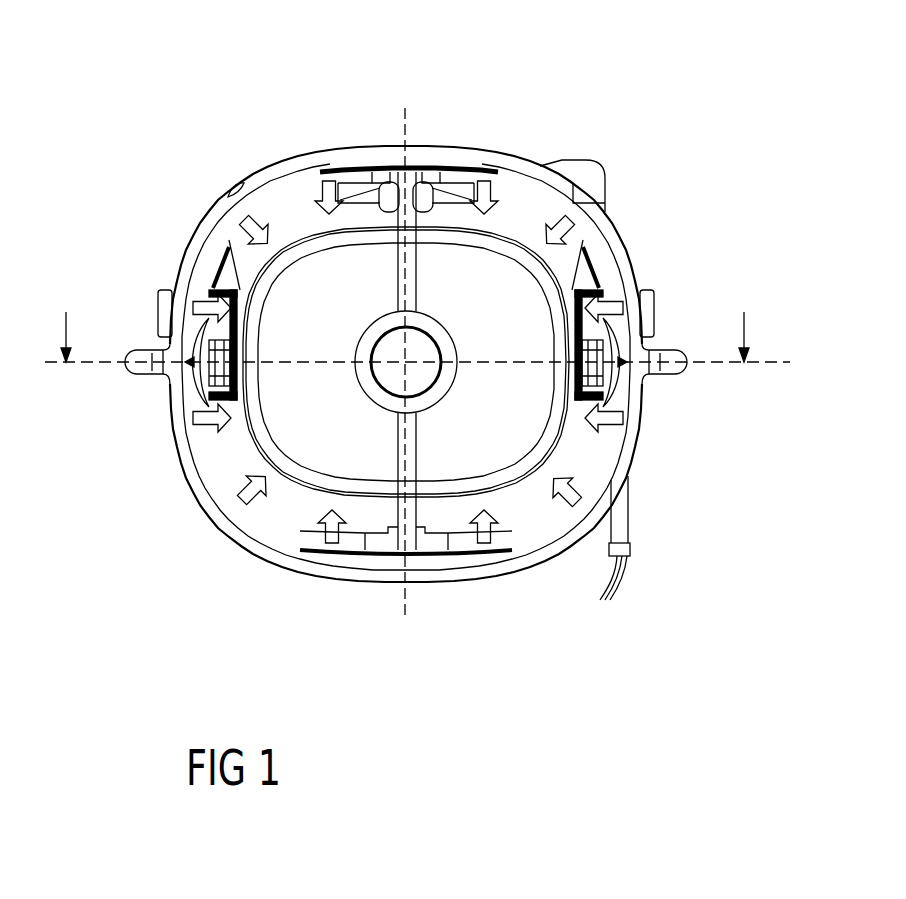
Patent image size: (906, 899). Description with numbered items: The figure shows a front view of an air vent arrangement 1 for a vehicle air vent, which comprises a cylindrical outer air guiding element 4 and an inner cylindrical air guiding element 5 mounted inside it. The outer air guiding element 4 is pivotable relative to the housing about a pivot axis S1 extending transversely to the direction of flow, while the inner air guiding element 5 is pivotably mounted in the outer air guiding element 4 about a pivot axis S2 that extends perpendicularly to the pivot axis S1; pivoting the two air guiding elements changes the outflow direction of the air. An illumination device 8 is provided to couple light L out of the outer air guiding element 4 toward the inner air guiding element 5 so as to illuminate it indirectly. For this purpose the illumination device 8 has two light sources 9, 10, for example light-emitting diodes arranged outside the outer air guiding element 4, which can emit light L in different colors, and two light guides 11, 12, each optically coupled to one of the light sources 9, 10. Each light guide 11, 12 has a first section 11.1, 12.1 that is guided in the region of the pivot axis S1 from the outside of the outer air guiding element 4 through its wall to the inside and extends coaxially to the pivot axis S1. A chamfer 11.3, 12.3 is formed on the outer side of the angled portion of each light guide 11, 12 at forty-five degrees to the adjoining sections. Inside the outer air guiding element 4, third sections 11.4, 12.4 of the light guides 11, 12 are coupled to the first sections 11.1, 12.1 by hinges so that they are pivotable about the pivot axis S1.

The air vent arrangement 1 is at (148, 86).
The outer air guiding element 4 is at (335, 165).
The inner air guiding element 5 is at (265, 443).
The illumination device 8 is at (281, 196).
The light source 9 is at (167, 290).
The light source 10 is at (655, 292).
The light guide 11 is at (128, 366).
The first section 11.1 is at (150, 385).
The chamfer 11.3 is at (130, 338).
The third section 11.4 is at (225, 248).
The light guide 12 is at (657, 368).
The first section 12.1 is at (655, 387).
The chamfer 12.3 is at (682, 338).
The third section 12.4 is at (582, 240).
The pivot axis S1 is at (512, 360).
The pivot axis S2 is at (407, 118).
The light L is at (564, 216).